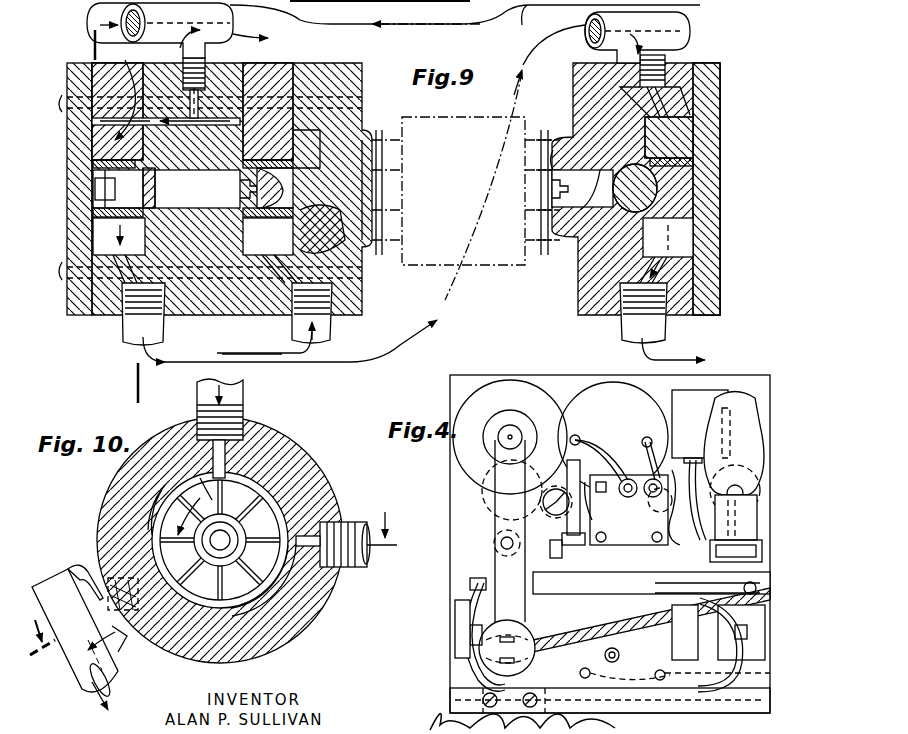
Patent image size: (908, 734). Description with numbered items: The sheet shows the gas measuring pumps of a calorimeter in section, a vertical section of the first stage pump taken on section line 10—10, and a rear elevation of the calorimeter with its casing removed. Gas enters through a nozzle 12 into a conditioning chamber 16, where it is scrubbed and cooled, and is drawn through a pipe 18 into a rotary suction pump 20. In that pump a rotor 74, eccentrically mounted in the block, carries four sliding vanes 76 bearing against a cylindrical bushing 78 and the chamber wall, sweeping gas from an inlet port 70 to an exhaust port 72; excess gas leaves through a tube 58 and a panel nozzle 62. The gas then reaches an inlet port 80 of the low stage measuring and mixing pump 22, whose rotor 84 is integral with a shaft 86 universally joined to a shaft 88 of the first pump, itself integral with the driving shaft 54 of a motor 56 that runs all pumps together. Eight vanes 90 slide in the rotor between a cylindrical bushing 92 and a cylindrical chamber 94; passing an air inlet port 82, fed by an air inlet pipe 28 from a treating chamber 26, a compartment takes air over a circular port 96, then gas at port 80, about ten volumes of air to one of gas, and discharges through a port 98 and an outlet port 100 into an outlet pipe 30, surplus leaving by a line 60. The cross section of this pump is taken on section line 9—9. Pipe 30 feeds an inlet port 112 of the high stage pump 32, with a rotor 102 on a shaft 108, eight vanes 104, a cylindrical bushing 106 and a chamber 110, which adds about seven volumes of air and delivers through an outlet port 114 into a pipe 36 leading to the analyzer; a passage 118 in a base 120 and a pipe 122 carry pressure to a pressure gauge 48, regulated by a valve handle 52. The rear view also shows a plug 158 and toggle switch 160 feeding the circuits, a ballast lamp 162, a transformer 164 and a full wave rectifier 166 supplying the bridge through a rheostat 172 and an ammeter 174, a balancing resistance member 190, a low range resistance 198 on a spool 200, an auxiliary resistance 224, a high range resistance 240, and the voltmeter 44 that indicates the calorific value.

In FIG. 9, the section line 10— 10 is at (88, 42).
In FIG. 10, the section line 10— 10 is at (130, 386).
In FIG. 9, the inlet port 80 is at (148, 80).
In FIG. 10, the inlet port 80 is at (125, 580).
In FIG. 9, the exhaust port 72 is at (215, 118).
In FIG. 9, the suction pump 20 is at (320, 76).
In FIG. 9, the tube 58 is at (225, 22).
In FIG. 10, the tube 58 is at (118, 662).
In FIG. 9, the base 120 is at (360, 6).
In FIG. 9, the passage 118 is at (388, 19).
In FIG. 9, the rotor 84 is at (105, 142).
In FIG. 10, the rotor 84 is at (262, 505).
In FIG. 9, the cylindrical bushing 92 is at (93, 164).
In FIG. 10, the cylindrical bushing 92 is at (245, 552).
In FIG. 9, the vanes 90 is at (100, 232).
In FIG. 10, the vanes 90 is at (240, 510).
In FIG. 9, the low stage measuring and mixing pump 22 is at (108, 312).
In FIG. 10, the low stage measuring and mixing pump 22 is at (312, 470).
In FIG. 4, the low stage measuring and mixing pump 22 is at (760, 620).
In FIG. 9, the shaft 86 is at (166, 188).
In FIG. 9, the rotor 74 is at (290, 135).
In FIG. 9, the vanes 76 is at (283, 180).
In FIG. 9, the cylindrical bushing 78 is at (330, 218).
In FIG. 9, the shaft 88 is at (388, 232).
In FIG. 9, the inlet port 70 is at (340, 275).
In FIG. 9, the pipe 18 is at (328, 325).
In FIG. 9, the motor 56 is at (478, 272).
In FIG. 4, the motor 56 is at (478, 570).
In FIG. 9, the driving shaft 54 is at (540, 130).
In FIG. 9, the outlet pipe 30 is at (598, 40).
In FIG. 10, the outlet pipe 30 is at (355, 522).
In FIG. 9, the line 60 is at (690, 42).
In FIG. 10, the line 60 is at (76, 577).
In FIG. 4, the line 60 is at (750, 625).
In FIG. 9, the inlet port 112 is at (680, 105).
In FIG. 9, the rotor 102 is at (680, 140).
In FIG. 9, the cylindrical bushing 106 is at (693, 162).
In FIG. 9, the vanes 104 is at (685, 238).
In FIG. 9, the chamber 110 is at (690, 248).
In FIG. 9, the outlet port 114 is at (660, 285).
In FIG. 9, the shaft 108 is at (590, 250).
In FIG. 9, the high stage pump 32 is at (580, 285).
In FIG. 4, the high stage pump 32 is at (455, 612).
In FIG. 9, the pipe 36 is at (665, 325).
In FIG. 10, the air inlet pipe 28 is at (243, 390).
In FIG. 4, the air inlet pipe 28 is at (700, 600).
In FIG. 10, the circular port 96 is at (190, 476).
In FIG. 10, the air inlet port 82 is at (270, 450).
In FIG. 10, the section line 9— 9 is at (207, 573).
In FIG. 10, the cylindrical chamber 94 is at (152, 525).
In FIG. 10, the outlet port 100 is at (300, 560).
In FIG. 10, the port 98 is at (270, 612).
In FIG. 4, the full wave rectifier 166 is at (530, 368).
In FIG. 4, the voltmeter 44 is at (593, 398).
In FIG. 4, the high range resistance 240 is at (656, 460).
In FIG. 4, the low range resistance 198 is at (628, 478).
In FIG. 4, the ammeter 174 is at (490, 505).
In FIG. 4, the rheostat 172 is at (494, 543).
In FIG. 4, the auxiliary resistance 224 is at (556, 516).
In FIG. 4, the spool 200 is at (619, 490).
In FIG. 4, the adjustable resistance member 190 is at (672, 518).
In FIG. 4, the transformer 164 is at (715, 392).
In FIG. 4, the ballast lamp 162 is at (748, 418).
In FIG. 4, the pressure gauge 48 is at (757, 496).
In FIG. 4, the valve handle 52 is at (758, 533).
In FIG. 4, the treating chamber 26 is at (545, 632).
In FIG. 4, the toggle switch 160 is at (598, 651).
In FIG. 4, the nozzle 62 is at (613, 669).
In FIG. 4, the nozzle 12 is at (665, 670).
In FIG. 4, the plug 158 is at (505, 668).
In FIG. 4, the conditioning chamber 16 is at (700, 686).
In FIG. 4, the pipe 122 is at (700, 580).